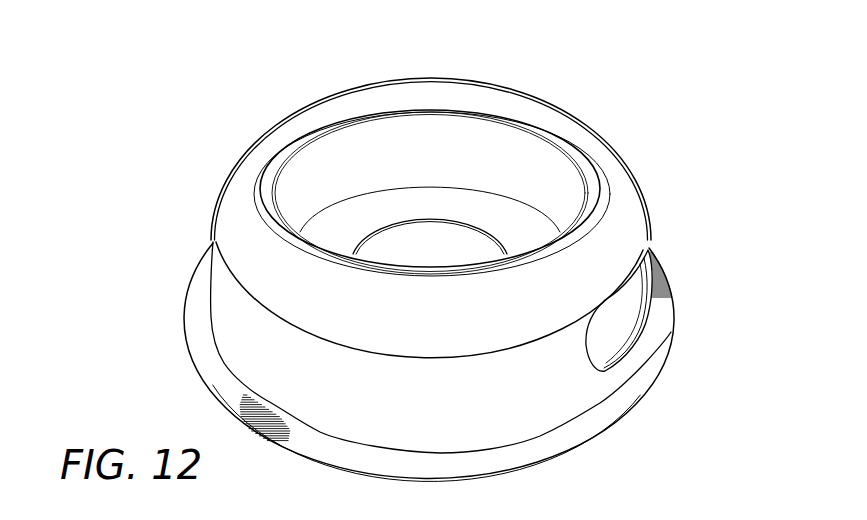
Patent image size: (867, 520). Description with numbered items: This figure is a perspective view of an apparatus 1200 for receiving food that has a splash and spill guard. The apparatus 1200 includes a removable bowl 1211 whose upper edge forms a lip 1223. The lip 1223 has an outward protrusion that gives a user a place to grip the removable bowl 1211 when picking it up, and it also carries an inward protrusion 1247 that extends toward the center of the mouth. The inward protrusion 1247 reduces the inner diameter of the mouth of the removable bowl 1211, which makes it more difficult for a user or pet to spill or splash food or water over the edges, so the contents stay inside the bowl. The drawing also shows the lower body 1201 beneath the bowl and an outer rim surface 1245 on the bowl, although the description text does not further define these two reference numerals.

The apparatus for receiving food 1200 is at (633, 96).
The base body 1201 is at (573, 387).
The removable bowl 1211 is at (508, 91).
The lip 1223 is at (262, 134).
The outer rim surface 1245 is at (632, 172).
The inward protrusion 1247 is at (363, 117).